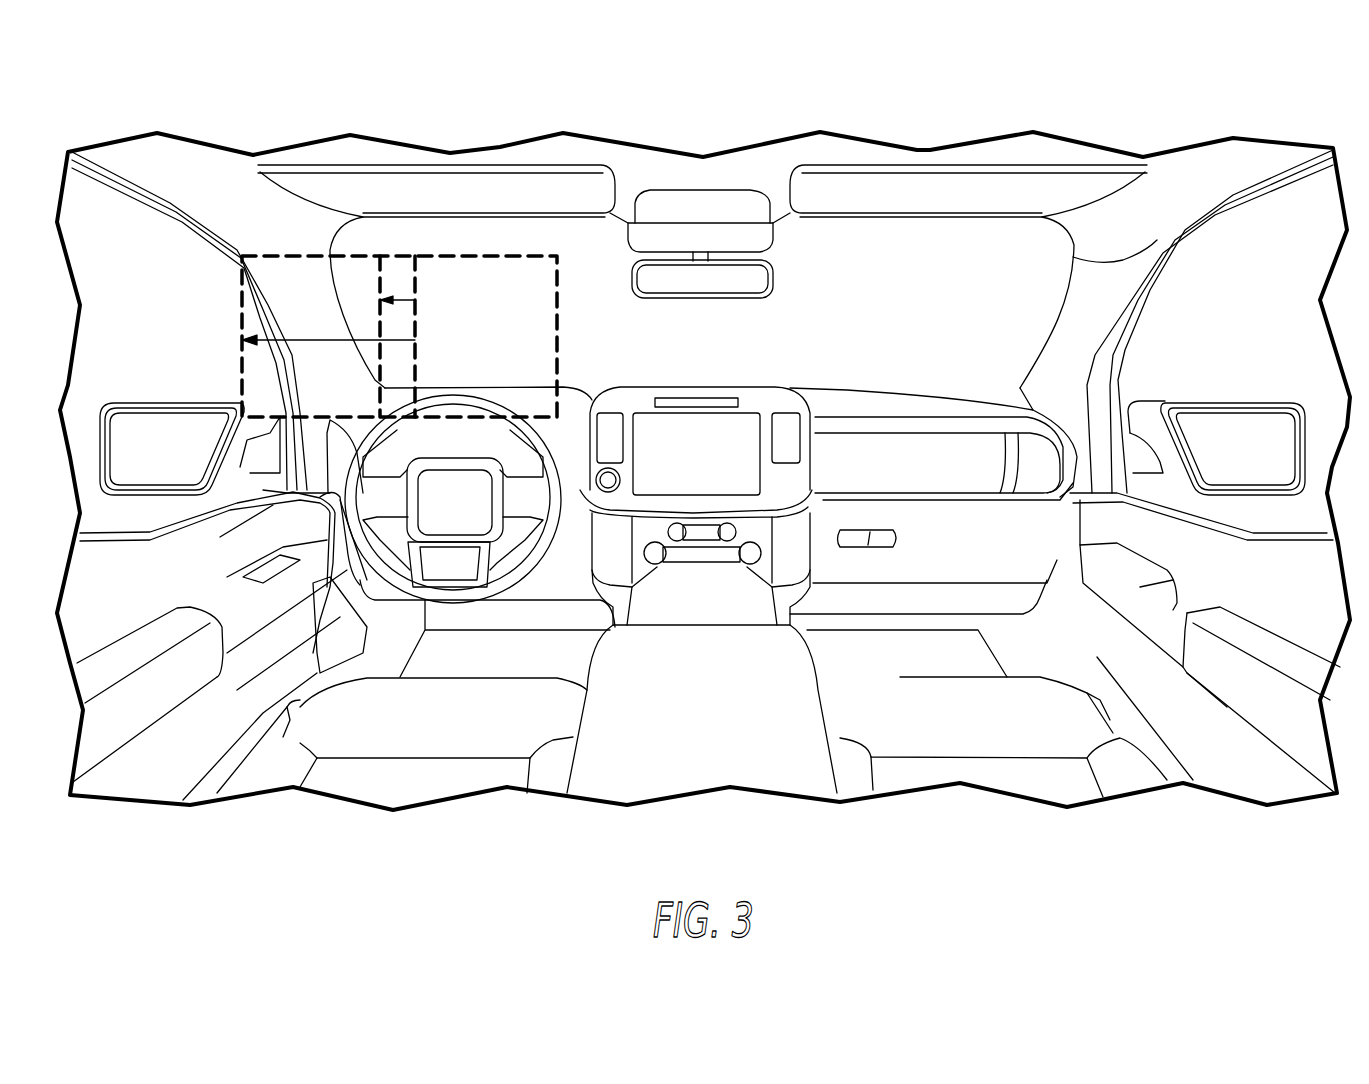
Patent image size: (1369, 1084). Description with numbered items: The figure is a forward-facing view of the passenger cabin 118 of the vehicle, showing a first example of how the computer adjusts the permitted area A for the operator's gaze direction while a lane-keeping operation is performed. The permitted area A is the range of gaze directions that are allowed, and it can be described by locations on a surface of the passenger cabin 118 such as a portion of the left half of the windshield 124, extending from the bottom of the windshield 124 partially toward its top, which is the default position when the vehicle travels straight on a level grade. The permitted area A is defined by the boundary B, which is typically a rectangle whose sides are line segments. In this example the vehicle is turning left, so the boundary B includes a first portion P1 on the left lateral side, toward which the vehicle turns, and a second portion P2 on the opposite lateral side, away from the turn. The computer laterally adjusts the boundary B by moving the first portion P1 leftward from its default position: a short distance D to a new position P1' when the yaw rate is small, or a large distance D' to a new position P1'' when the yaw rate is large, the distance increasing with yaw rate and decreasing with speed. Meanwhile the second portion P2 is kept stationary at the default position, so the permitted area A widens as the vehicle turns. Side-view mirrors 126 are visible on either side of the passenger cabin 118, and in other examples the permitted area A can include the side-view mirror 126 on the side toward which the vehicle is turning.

The passenger cabin 118 is at (990, 164).
The windshield 124 is at (862, 272).
The side-view mirror 126 is at (175, 430).
The first portion P1 is at (335, 165).
The new position of first portion P1' is at (237, 182).
The new position of first portion P1'' is at (182, 271).
The second portion P2 is at (560, 363).
The permitted area A is at (483, 277).
The boundary B is at (560, 307).
The distance D is at (442, 323).
The distance D' is at (429, 356).